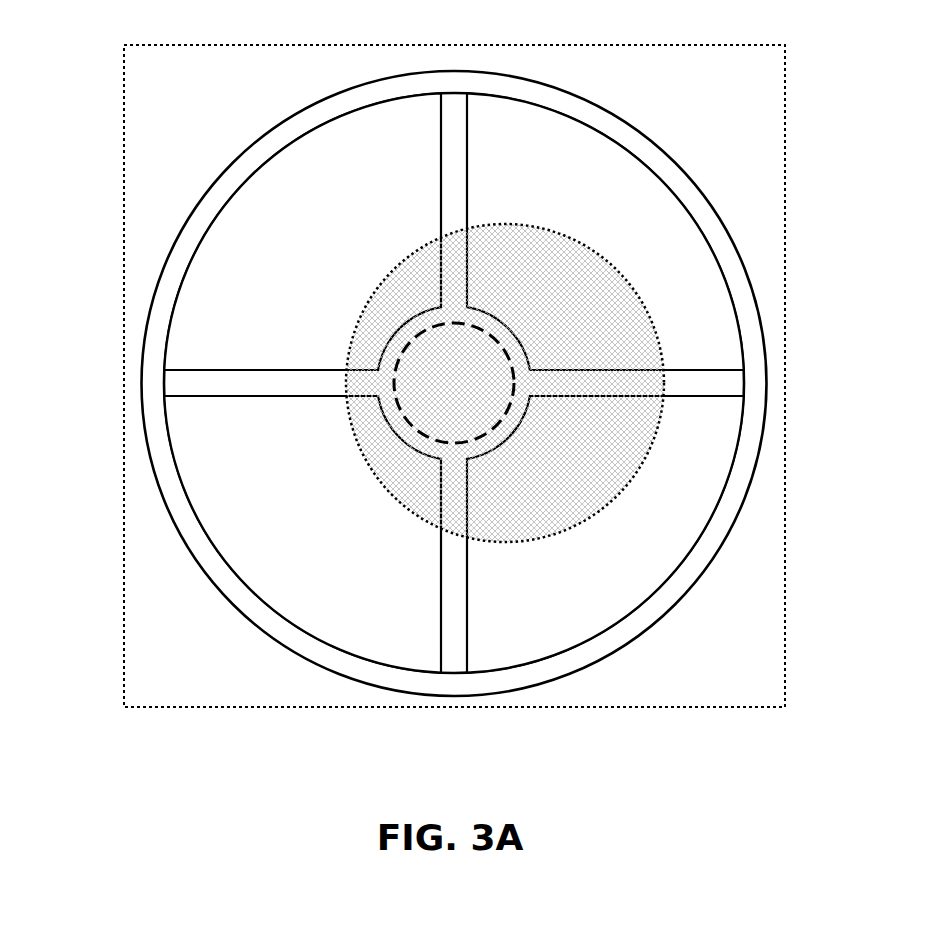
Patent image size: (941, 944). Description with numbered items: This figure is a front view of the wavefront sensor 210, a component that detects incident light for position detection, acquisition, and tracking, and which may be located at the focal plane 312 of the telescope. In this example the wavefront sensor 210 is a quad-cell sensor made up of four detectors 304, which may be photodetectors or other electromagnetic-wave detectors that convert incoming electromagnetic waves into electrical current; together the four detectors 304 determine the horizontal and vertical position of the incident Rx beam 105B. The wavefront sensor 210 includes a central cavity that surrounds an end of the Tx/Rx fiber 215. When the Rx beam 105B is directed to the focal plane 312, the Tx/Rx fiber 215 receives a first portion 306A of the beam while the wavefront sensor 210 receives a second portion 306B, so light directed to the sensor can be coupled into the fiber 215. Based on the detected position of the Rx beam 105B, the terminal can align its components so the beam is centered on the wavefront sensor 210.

The detectors 304 is at (590, 607).
The Tx/Rx fiber 215 is at (418, 333).
The first portion 306A is at (425, 412).
The second portion 306B is at (583, 440).
The Rx beam 105B is at (615, 268).
The wavefront sensor 210 is at (768, 376).
The focal plane 312 is at (785, 686).